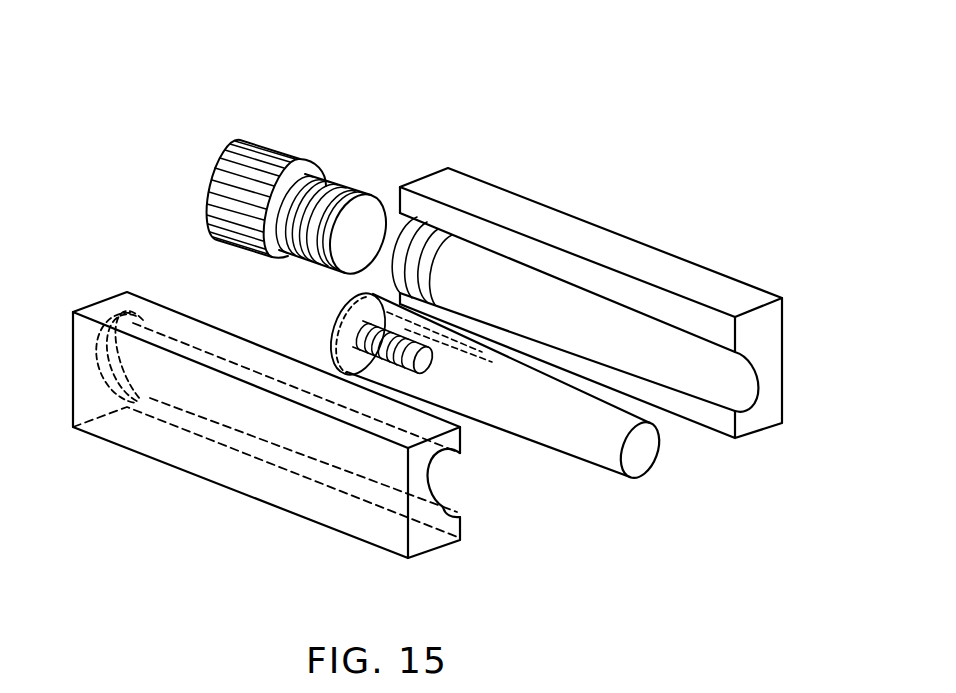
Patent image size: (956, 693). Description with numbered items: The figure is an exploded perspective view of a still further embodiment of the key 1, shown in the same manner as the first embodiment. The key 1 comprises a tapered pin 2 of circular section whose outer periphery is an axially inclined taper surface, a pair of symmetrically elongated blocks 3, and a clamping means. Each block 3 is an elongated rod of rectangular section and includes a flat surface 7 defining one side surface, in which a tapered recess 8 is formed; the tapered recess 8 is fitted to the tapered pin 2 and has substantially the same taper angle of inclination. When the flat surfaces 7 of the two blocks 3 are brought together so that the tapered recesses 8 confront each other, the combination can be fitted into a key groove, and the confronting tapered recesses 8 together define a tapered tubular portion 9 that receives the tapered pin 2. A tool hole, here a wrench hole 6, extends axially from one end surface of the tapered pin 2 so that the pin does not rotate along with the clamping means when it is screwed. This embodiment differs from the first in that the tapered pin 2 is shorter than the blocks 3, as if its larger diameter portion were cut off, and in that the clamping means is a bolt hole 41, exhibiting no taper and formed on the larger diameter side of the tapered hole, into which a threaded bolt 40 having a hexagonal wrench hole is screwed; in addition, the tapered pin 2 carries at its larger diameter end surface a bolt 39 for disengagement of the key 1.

The key 1 is at (411, 78).
The tapered pin 2 is at (577, 440).
The blocks 3 is at (417, 328).
The wrench hole 6 is at (460, 520).
The flat surface 7 is at (710, 323).
The tapered recess 8 is at (567, 264).
The tapered tubular portion 9 is at (585, 318).
The bolt 39 is at (347, 307).
The threaded bolt 40 is at (273, 140).
The bolt hole 41 is at (452, 240).